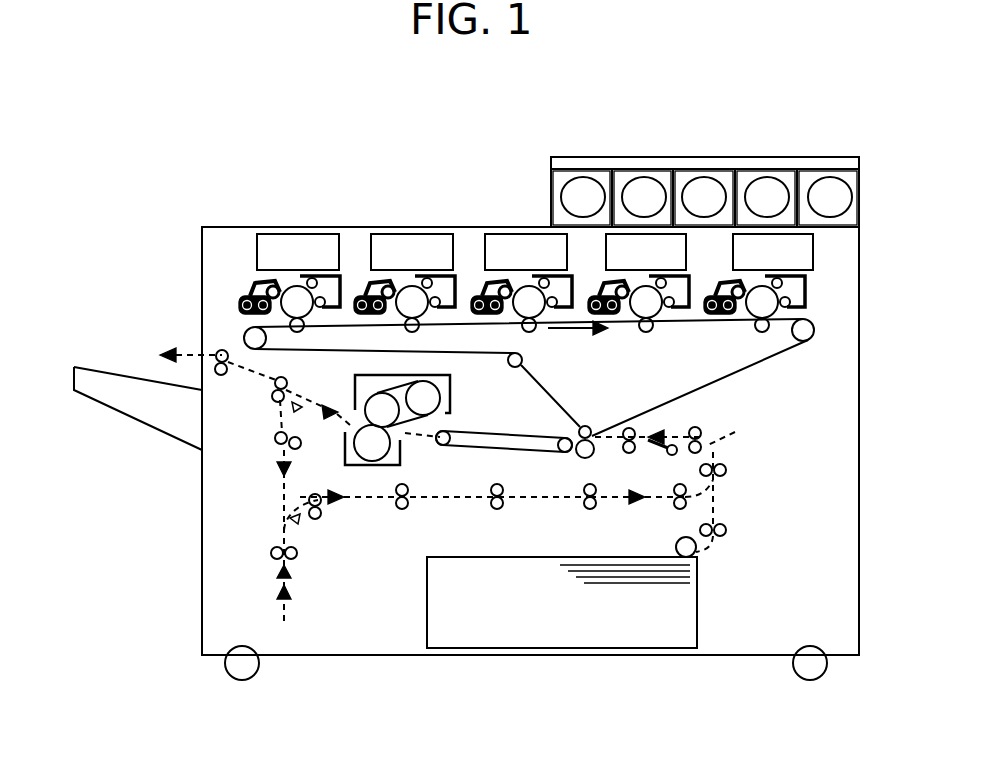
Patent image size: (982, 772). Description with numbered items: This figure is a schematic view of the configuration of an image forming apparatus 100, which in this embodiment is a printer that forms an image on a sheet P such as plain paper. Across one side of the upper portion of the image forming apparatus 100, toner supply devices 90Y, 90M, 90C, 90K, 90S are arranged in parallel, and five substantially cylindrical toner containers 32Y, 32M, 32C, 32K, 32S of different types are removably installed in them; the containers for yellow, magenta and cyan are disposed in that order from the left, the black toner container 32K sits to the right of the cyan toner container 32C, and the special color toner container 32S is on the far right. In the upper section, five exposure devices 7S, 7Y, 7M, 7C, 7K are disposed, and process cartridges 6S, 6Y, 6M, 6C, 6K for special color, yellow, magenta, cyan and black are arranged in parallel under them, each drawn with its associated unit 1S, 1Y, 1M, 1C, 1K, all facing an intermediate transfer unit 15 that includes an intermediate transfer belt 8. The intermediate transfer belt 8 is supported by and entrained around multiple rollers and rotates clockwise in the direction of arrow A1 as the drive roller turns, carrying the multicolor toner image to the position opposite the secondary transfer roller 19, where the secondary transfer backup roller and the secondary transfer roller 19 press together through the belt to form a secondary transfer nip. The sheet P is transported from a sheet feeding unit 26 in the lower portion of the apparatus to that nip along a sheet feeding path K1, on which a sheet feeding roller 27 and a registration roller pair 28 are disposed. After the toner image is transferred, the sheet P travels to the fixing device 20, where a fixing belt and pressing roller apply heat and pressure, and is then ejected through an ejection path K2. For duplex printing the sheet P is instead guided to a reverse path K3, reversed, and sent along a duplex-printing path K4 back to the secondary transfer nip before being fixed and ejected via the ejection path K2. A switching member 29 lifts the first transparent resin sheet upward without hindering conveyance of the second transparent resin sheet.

The image forming apparatus 100 is at (383, 162).
The toner container 32Y is at (577, 187).
The toner container 32M is at (640, 187).
The toner container 32C is at (702, 187).
The toner container 32K is at (773, 187).
The toner container 32S is at (833, 187).
The toner supply device 90Y is at (597, 170).
The toner supply device 90M is at (660, 170).
The toner supply device 90C is at (727, 170).
The toner supply device 90K is at (788, 170).
The toner supply device 90S is at (847, 167).
The exposure device 7S is at (298, 252).
The exposure device 7Y is at (412, 252).
The exposure device 7M is at (526, 252).
The exposure device 7C is at (646, 252).
The exposure device 7K is at (773, 252).
The process cartridge 6S is at (297, 298).
The process cartridge 6Y is at (410, 297).
The process cartridge 6M is at (529, 298).
The process cartridge 6C is at (633, 318).
The process cartridge 6K is at (748, 317).
The image forming unit (S) 1S is at (258, 257).
The image forming unit (Y) 1Y is at (380, 257).
The image forming unit (M) 1M is at (495, 256).
The image forming unit (C) 1C is at (631, 336).
The image forming unit (K) 1K is at (734, 320).
The intermediate transfer belt 8 is at (488, 355).
The intermediate transfer unit 15 is at (531, 377).
The secondary transfer roller 19 is at (568, 456).
The fixing device 20 is at (406, 446).
The sheet feeding unit 26 is at (427, 602).
The sheet feeding roller 27 is at (676, 547).
The registration roller pair 28 is at (623, 452).
The switching member 29 is at (668, 455).
The sheet P is at (652, 592).
The arrow A1 is at (578, 340).
The sheet feeding path K1 is at (678, 482).
The ejection path K2 is at (262, 386).
The reverse path K3 is at (283, 497).
The duplex-printing path K4 is at (478, 500).